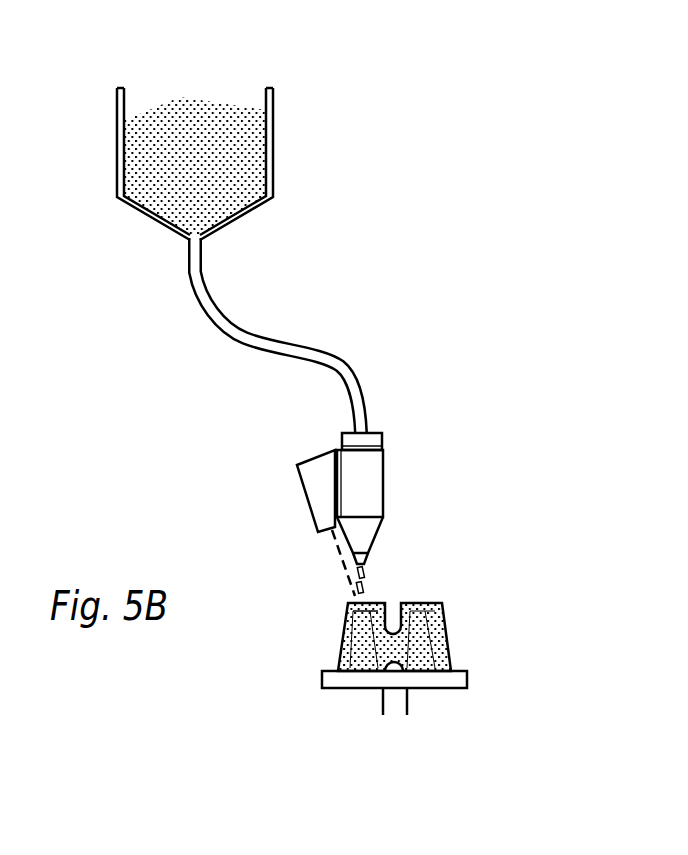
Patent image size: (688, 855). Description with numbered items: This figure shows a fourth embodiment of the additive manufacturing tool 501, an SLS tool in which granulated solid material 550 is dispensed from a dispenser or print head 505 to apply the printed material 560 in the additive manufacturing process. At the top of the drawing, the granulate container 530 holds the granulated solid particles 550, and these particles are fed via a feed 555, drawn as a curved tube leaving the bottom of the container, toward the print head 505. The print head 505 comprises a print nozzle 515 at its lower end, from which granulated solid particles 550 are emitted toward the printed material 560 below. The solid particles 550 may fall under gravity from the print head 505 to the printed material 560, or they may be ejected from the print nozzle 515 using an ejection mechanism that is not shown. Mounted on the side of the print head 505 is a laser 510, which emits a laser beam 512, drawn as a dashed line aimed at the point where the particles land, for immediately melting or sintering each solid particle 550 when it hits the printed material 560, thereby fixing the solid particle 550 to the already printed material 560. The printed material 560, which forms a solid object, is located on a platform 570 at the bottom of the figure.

The additive manufacturing tool 501 is at (466, 204).
The print head 505 is at (377, 477).
The laser 510 is at (315, 485).
The laser beam 512 is at (342, 560).
The print nozzle 515 is at (372, 558).
The granulate container 530 is at (273, 150).
The granulated solid material 550 is at (198, 113).
The feed 555 is at (337, 363).
The printed material 560 is at (427, 622).
The platform 570 is at (457, 682).